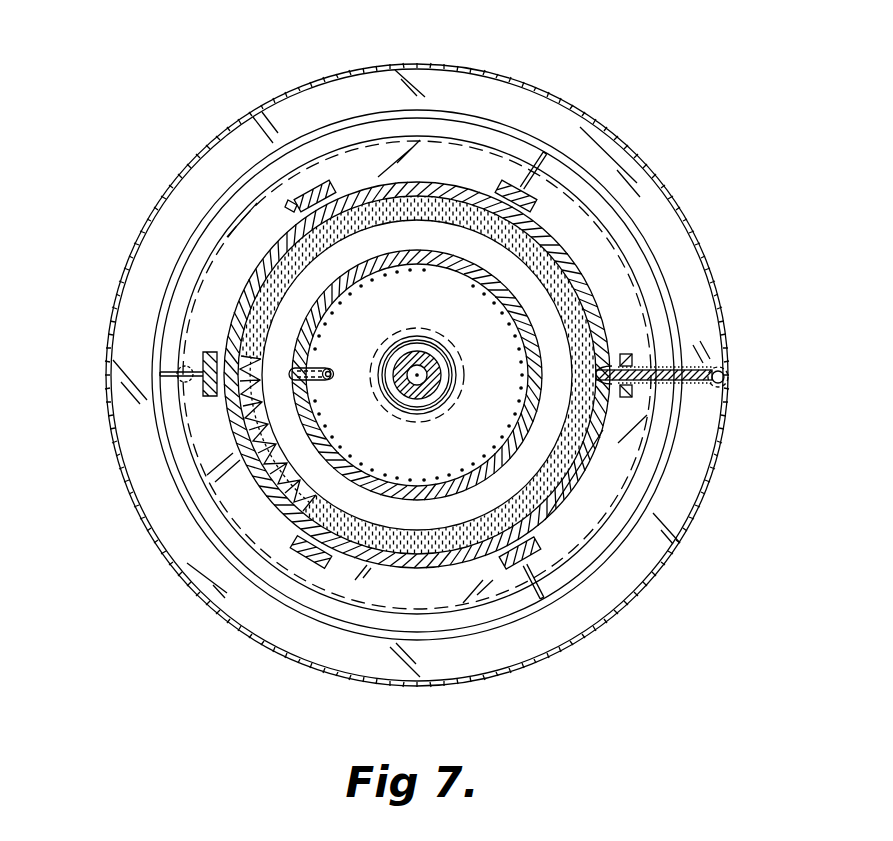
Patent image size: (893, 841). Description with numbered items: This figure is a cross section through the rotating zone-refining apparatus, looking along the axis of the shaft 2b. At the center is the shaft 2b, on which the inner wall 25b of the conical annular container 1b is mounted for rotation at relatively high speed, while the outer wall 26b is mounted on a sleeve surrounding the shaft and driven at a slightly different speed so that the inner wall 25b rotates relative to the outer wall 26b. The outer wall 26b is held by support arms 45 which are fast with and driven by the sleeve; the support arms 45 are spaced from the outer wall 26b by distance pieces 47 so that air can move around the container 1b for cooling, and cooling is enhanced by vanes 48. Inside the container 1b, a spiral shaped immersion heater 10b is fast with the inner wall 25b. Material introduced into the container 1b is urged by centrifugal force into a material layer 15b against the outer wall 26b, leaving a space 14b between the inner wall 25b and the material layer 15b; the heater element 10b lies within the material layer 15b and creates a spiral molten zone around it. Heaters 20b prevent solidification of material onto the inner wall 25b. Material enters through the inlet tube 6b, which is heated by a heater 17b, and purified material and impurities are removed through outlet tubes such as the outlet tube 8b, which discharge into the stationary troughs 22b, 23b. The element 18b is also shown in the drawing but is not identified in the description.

The annular container 1b is at (370, 182).
The shaft 2b is at (438, 368).
The inlet tube 6b is at (291, 373).
The outlet tube 8b is at (672, 372).
The spiral shaped immersion heater 10b is at (562, 494).
The space 14b is at (408, 513).
The material layer 15b is at (437, 212).
The heater 17b is at (333, 380).
The clamp blocks 18b is at (646, 362).
The heaters 20b is at (411, 271).
The stationary trough 22b is at (665, 195).
The stationary trough 23b is at (598, 515).
The inner wall 25b is at (567, 248).
The outer wall 26b is at (575, 255).
The support arms 45 is at (300, 206).
The distance pieces 47 is at (297, 212).
The vanes 48 is at (515, 300).